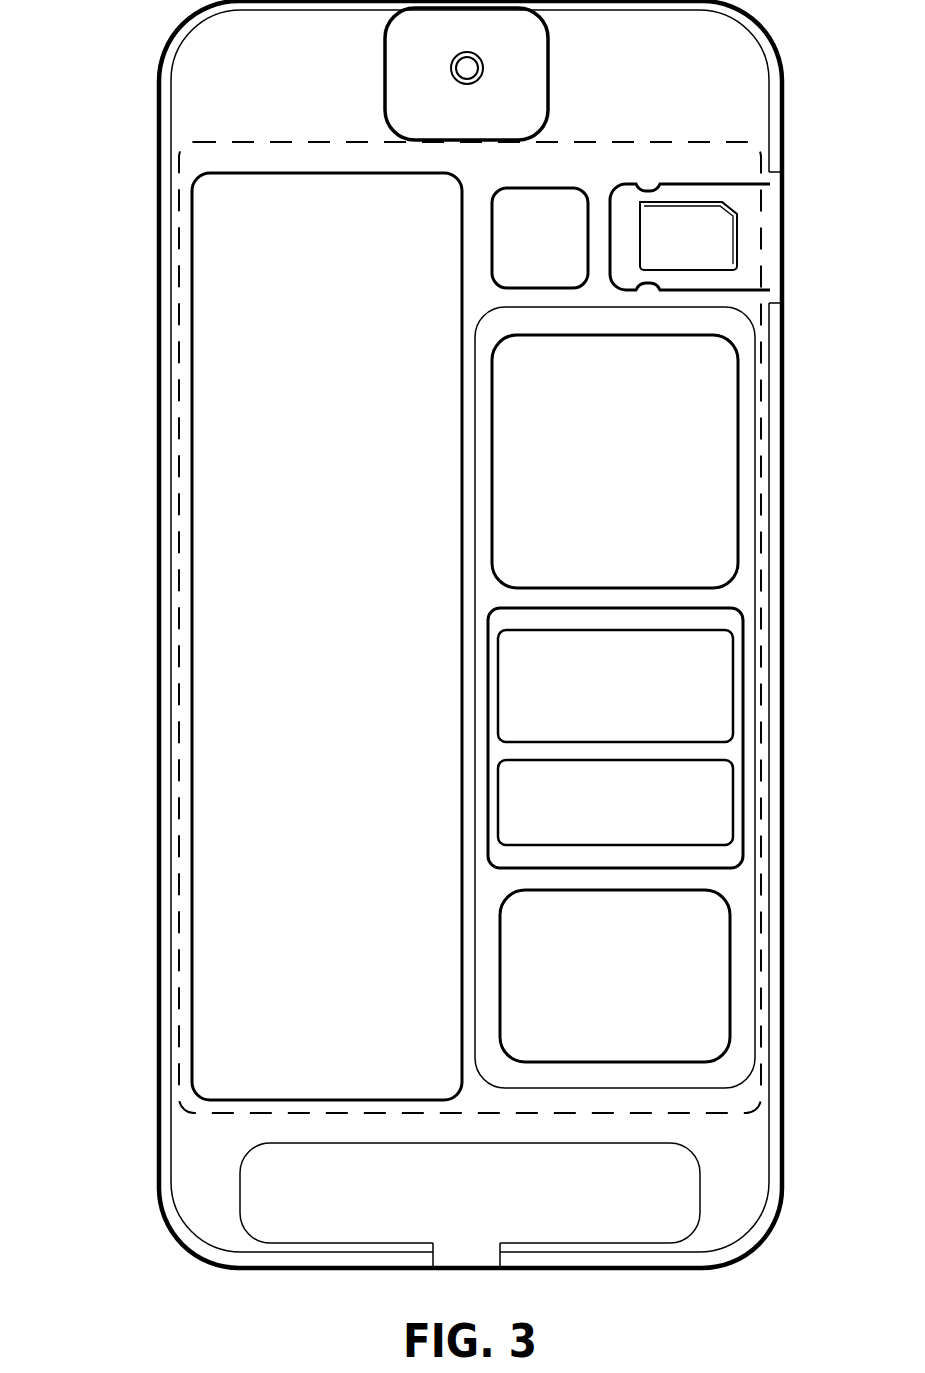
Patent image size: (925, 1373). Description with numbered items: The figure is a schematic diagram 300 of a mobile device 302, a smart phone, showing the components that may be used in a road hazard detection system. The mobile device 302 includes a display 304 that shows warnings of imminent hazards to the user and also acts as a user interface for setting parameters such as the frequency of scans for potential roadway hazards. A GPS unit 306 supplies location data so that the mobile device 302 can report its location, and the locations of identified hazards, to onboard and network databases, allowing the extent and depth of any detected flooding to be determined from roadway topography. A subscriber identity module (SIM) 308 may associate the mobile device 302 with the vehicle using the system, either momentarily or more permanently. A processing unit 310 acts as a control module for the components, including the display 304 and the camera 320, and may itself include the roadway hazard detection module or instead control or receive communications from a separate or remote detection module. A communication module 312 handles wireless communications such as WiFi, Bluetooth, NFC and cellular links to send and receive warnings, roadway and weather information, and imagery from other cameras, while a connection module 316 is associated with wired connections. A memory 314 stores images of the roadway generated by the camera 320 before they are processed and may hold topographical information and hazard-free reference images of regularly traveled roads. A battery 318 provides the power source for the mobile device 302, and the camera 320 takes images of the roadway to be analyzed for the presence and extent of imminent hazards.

The schematic diagram 300 is at (84, 102).
The mobile device 302 is at (157, 212).
The display 304 is at (157, 332).
The GPS unit 306 is at (570, 188).
The subscriber identity module (SIM) 308 is at (667, 183).
The processing unit 310 is at (593, 477).
The communication module 312 is at (593, 702).
The memory 314 is at (593, 818).
The connection module 316 is at (593, 990).
The battery 318 is at (308, 650).
The camera 320 is at (384, 52).